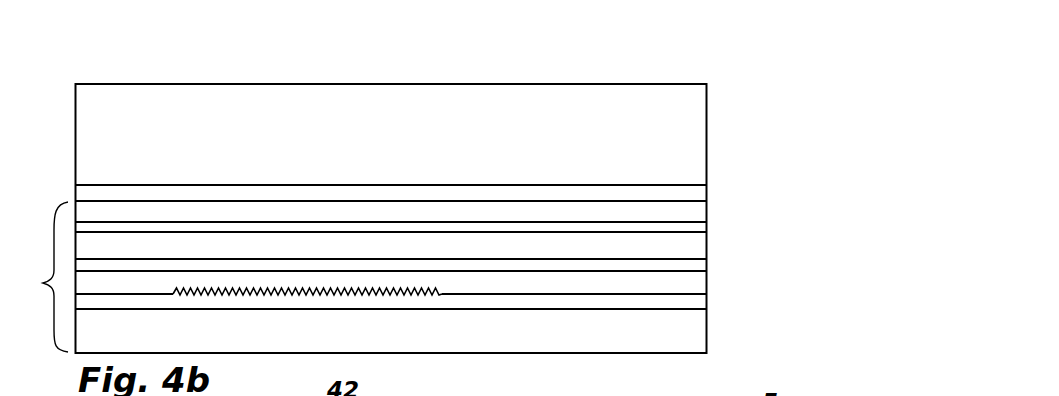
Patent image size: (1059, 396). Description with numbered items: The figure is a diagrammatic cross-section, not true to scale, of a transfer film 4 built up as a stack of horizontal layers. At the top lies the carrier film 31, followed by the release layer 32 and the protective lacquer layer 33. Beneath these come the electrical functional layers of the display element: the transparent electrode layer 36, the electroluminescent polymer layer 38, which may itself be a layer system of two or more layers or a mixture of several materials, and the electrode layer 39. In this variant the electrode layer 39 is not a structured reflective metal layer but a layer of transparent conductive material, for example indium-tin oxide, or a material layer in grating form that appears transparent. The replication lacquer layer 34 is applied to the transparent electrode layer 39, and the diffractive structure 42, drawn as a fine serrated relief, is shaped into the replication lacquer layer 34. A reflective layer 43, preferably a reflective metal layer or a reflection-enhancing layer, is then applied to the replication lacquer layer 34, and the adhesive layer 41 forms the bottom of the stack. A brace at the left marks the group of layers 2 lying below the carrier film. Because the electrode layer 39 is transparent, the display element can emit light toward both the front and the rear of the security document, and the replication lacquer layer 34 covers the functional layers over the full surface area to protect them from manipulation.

The transfer film 4 is at (690, 70).
The layer stack 2 is at (45, 277).
The carrier film 31 is at (697, 133).
The release layer 32 is at (697, 192).
The protective lacquer layer 33 is at (697, 205).
The transparent electrode layer 36 is at (697, 223).
The electroluminescent polymer layer 38 is at (697, 242).
The electrode layer 39 is at (697, 263).
The replication lacquer layer 34 is at (697, 290).
The reflective layer 43 is at (697, 302).
The adhesive layer 41 is at (697, 328).
The diffractive structure 42 is at (308, 287).